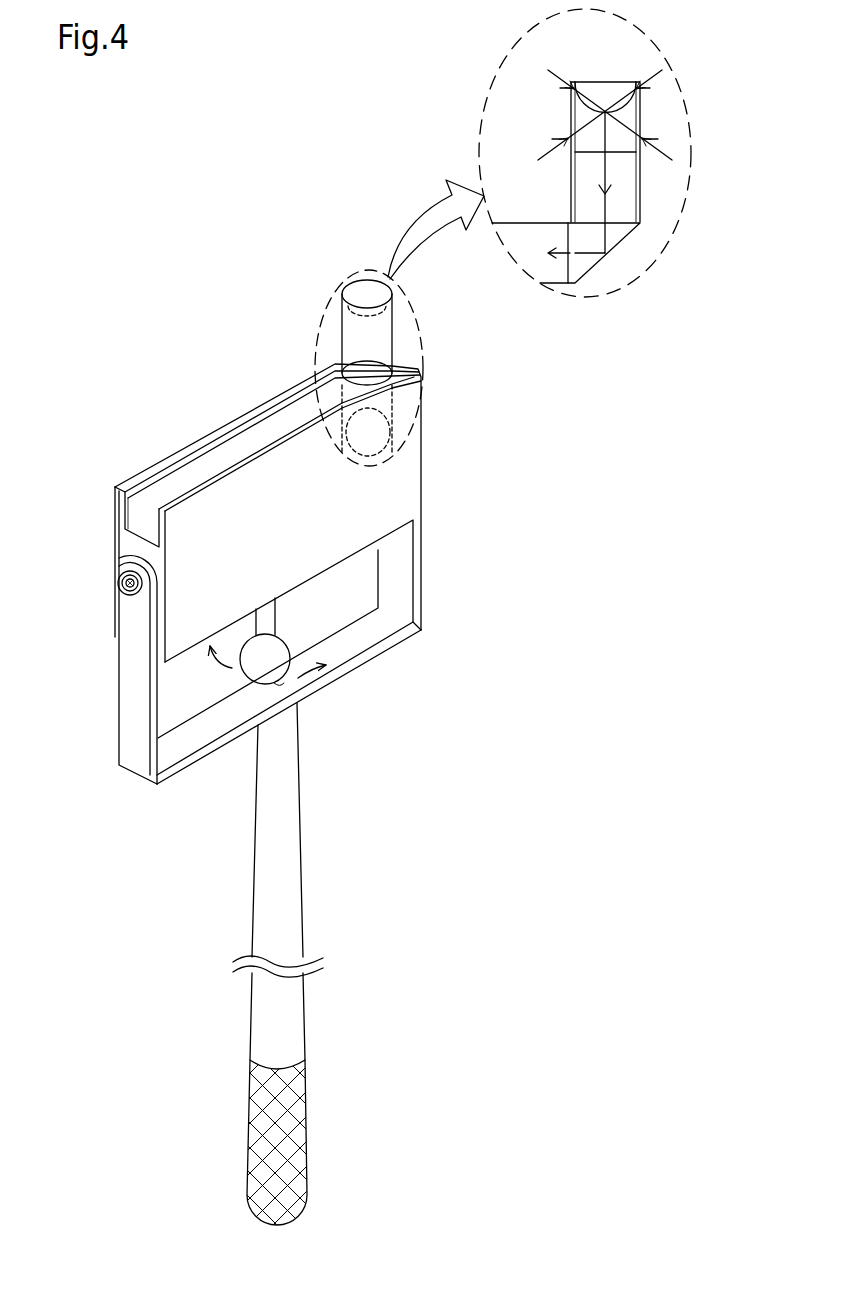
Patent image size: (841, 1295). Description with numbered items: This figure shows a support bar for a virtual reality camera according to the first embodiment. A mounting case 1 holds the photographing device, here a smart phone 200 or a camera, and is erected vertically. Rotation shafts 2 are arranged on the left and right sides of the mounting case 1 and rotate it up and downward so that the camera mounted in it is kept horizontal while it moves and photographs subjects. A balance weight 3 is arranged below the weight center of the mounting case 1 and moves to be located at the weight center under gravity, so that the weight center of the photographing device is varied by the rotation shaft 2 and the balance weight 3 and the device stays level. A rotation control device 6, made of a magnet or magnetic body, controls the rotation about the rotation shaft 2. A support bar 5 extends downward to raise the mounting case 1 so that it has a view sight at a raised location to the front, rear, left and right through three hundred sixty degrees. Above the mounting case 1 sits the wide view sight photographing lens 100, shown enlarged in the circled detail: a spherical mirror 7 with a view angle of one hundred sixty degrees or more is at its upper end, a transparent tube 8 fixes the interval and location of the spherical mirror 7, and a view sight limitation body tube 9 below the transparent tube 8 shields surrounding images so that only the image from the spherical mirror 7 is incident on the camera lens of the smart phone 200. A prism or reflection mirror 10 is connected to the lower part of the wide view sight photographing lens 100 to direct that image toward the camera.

The mounting case 1 is at (410, 482).
The rotation shaft 2 is at (126, 587).
The balance weight 3 is at (290, 637).
The support bar 5 is at (288, 888).
The rotation control device 6 is at (124, 574).
The spherical mirror 7 is at (631, 110).
The transparent tube 8 is at (640, 125).
The view sight limitation body tube 9 is at (630, 183).
The reflection mirror 10 is at (617, 243).
The wide view sight photographing lens 100 is at (382, 325).
The smart phone 200 is at (173, 481).